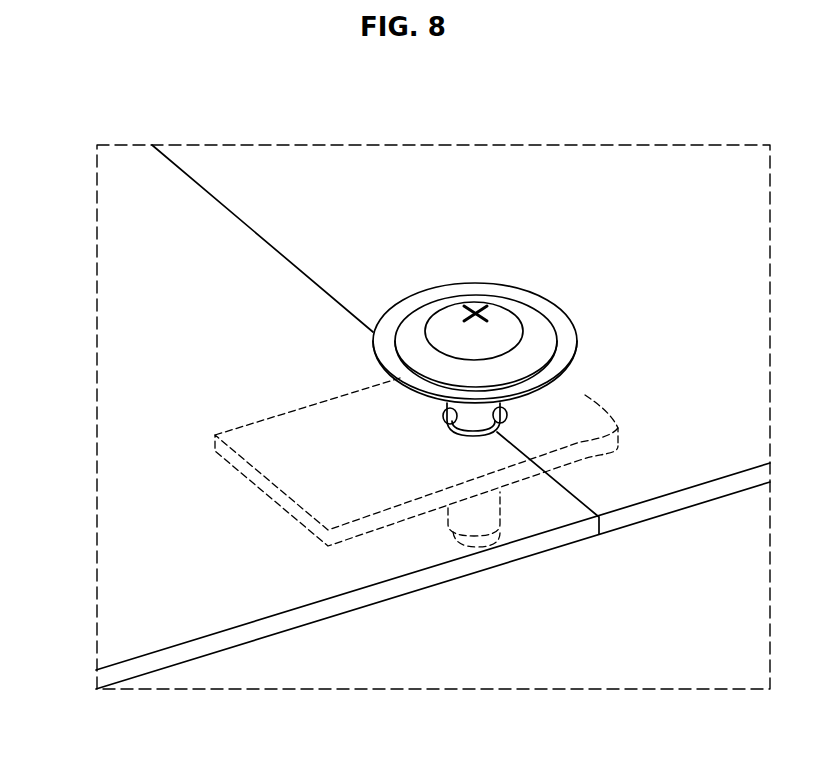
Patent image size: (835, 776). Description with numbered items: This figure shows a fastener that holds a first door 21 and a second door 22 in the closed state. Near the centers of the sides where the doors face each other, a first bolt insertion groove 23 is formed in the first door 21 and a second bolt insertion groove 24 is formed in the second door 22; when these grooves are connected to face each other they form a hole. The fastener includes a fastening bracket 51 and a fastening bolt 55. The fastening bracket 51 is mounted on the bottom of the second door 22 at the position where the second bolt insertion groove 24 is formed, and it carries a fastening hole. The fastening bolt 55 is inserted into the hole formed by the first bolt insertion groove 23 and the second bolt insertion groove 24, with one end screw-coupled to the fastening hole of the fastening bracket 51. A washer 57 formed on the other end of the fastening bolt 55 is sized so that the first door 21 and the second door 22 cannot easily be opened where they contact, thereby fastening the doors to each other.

The first door 21 is at (650, 187).
The second door 22 is at (145, 363).
The first bolt insertion groove 23 is at (505, 408).
The second bolt insertion groove 24 is at (442, 411).
The fastening bracket 51 is at (354, 488).
The fastening bolt 55 is at (473, 305).
The washer 57 is at (413, 322).